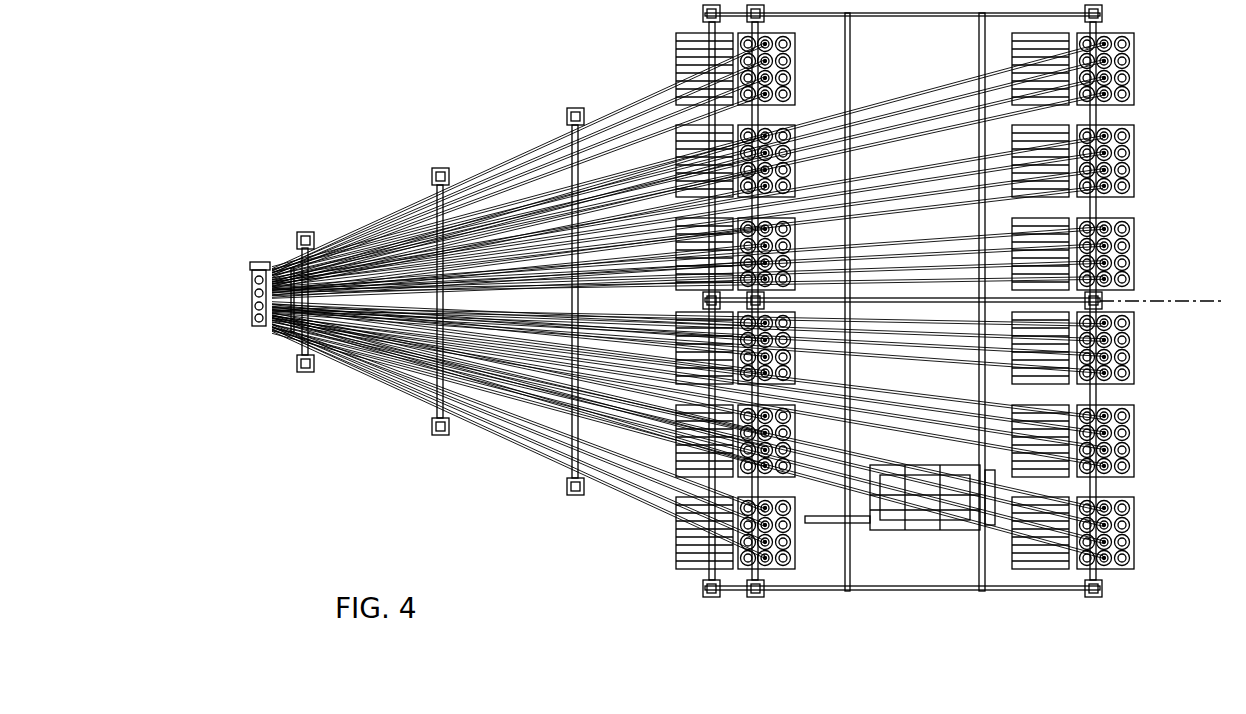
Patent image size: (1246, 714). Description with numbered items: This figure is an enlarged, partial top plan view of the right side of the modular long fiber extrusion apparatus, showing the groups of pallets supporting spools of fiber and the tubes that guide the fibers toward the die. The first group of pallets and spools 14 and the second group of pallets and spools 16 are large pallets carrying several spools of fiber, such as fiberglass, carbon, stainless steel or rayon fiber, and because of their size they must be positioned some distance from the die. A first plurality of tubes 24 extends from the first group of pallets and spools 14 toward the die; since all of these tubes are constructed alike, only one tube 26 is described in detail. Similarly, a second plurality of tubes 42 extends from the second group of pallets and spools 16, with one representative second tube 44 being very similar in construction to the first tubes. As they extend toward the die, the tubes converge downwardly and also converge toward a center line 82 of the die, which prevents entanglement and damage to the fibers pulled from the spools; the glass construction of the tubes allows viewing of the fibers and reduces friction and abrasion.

The first group of pallets and spools 14 is at (1122, 580).
The second group of pallets and spools 16 is at (778, 578).
The first plurality of tubes 24 is at (914, 88).
The tube 26 is at (1072, 560).
The second plurality of tubes 42 is at (617, 494).
The second tube 44 is at (652, 508).
The center line 82 is at (1160, 300).